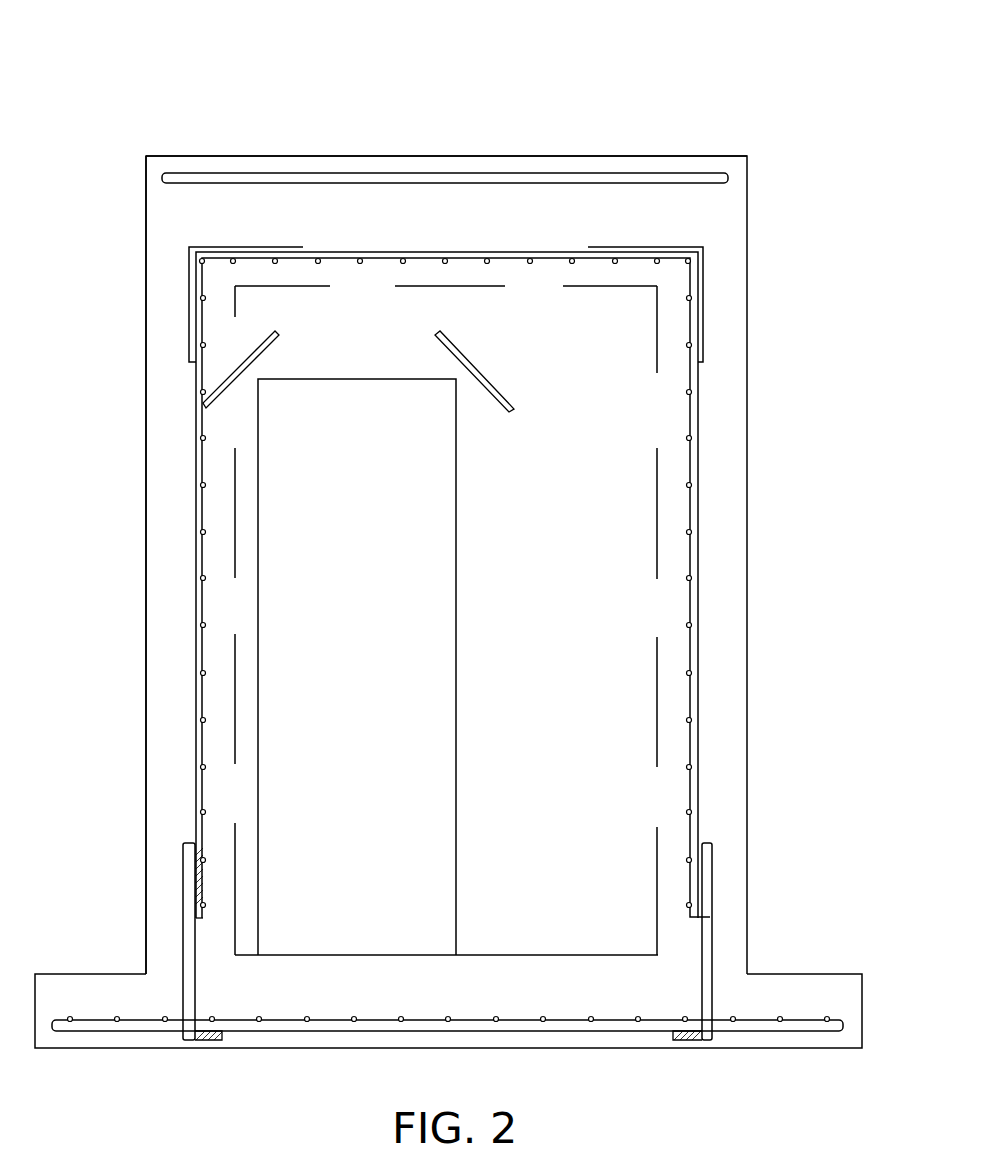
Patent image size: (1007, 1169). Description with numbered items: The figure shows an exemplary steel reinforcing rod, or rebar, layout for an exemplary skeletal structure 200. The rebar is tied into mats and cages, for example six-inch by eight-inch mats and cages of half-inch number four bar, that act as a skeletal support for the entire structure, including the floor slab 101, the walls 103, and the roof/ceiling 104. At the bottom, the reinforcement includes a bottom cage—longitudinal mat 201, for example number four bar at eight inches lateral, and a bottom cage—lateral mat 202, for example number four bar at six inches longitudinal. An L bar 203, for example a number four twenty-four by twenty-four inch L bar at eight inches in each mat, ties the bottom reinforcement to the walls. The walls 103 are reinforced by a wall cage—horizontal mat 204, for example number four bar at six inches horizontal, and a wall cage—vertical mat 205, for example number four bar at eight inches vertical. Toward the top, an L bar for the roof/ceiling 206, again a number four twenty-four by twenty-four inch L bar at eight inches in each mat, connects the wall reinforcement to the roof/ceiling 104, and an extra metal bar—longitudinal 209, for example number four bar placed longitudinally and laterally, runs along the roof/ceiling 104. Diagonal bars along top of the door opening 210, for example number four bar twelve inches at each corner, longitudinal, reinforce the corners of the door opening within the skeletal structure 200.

The skeletal structure 200 is at (702, 145).
The floor slab 101 is at (131, 973).
The walls 103 is at (147, 713).
The roof/ceiling 104 is at (577, 156).
The bottom cage—longitudinal mat 201 is at (236, 262).
The bottom cage—lateral mat 202 is at (343, 250).
The L bar 203 is at (712, 917).
The wall cage—horizontal mat 204 is at (689, 720).
The wall cage—vertical mat 205 is at (697, 604).
The L bar for the roof/ceiling 206 is at (703, 312).
The extra metal bar—longitudinal 209 is at (505, 173).
The diagonal bars along top of the door opening 210 is at (240, 398).